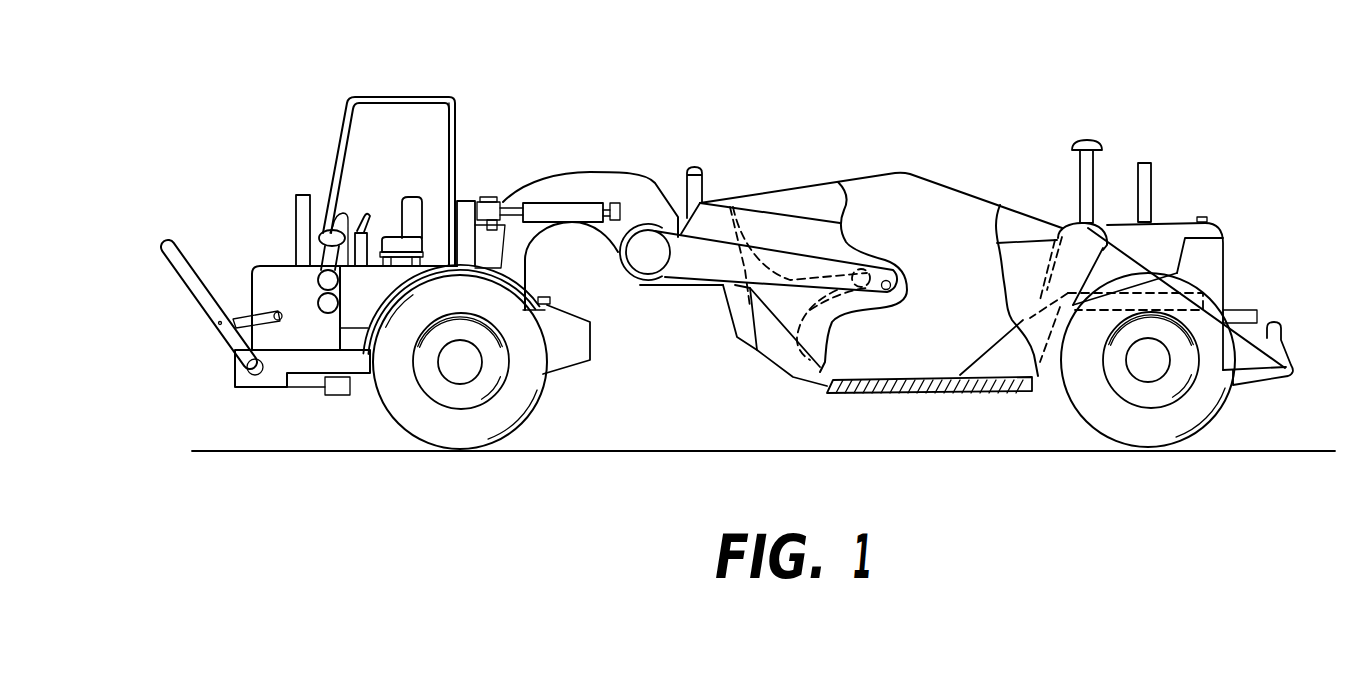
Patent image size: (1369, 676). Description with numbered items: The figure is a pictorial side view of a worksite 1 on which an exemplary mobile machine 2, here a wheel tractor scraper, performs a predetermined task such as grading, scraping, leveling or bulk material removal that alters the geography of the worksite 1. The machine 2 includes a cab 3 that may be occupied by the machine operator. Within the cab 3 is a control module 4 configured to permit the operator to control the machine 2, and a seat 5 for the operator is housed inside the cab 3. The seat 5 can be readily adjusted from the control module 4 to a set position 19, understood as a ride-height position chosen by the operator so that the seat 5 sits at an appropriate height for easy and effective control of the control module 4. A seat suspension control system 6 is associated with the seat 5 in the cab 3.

The worksite 1 is at (190, 425).
The mobile machine 2 is at (999, 124).
The cab 3 is at (397, 90).
The control module 4 is at (350, 205).
The seat 5 is at (424, 240).
The seat suspension control system 6 is at (448, 262).
The set position 19 is at (374, 240).